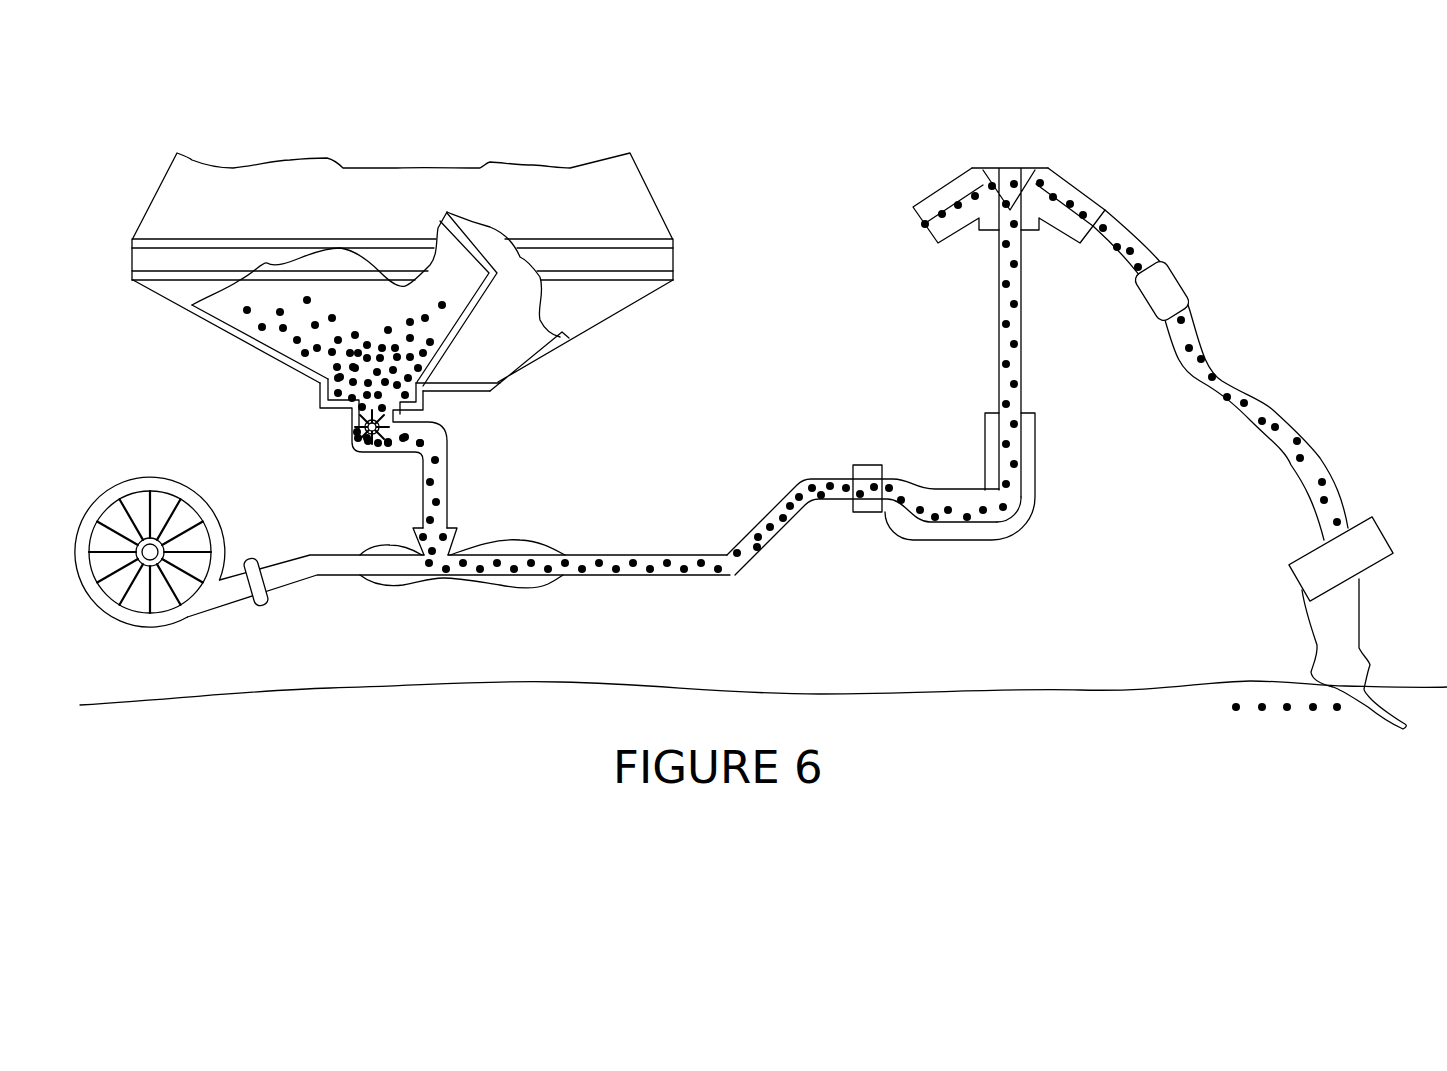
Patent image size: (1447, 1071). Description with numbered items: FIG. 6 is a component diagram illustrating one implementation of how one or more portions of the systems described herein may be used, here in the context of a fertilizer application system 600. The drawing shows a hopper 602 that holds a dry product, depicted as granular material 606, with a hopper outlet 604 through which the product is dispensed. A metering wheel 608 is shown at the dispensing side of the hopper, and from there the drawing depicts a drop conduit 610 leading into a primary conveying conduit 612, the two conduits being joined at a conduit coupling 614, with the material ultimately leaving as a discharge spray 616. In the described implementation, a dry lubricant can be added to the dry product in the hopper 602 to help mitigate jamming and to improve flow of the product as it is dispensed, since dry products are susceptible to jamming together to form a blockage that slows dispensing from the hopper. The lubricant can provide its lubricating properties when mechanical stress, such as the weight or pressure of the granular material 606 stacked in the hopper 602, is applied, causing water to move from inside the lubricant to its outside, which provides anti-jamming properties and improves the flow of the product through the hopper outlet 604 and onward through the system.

The fertilizer application system 600 is at (1304, 217).
The hopper 602 is at (155, 195).
The hopper outlet 604 is at (331, 352).
The granular material 606 is at (375, 333).
The metering wheel 608 is at (398, 422).
The drop conduit 610 is at (447, 488).
The primary conveying conduit 612 is at (428, 577).
The conduit coupling 614 is at (843, 498).
The discharge spray 616 is at (1340, 631).